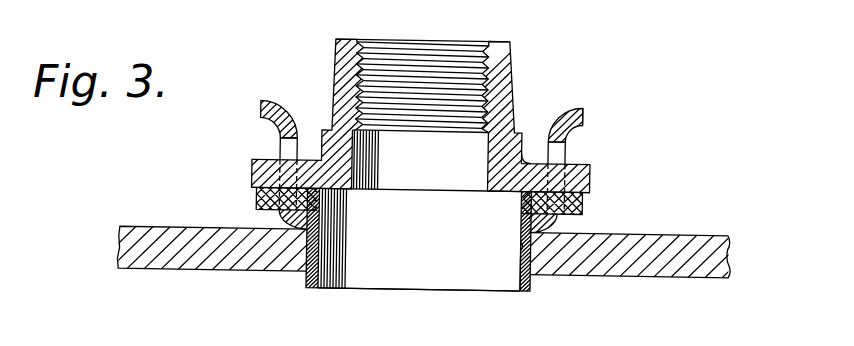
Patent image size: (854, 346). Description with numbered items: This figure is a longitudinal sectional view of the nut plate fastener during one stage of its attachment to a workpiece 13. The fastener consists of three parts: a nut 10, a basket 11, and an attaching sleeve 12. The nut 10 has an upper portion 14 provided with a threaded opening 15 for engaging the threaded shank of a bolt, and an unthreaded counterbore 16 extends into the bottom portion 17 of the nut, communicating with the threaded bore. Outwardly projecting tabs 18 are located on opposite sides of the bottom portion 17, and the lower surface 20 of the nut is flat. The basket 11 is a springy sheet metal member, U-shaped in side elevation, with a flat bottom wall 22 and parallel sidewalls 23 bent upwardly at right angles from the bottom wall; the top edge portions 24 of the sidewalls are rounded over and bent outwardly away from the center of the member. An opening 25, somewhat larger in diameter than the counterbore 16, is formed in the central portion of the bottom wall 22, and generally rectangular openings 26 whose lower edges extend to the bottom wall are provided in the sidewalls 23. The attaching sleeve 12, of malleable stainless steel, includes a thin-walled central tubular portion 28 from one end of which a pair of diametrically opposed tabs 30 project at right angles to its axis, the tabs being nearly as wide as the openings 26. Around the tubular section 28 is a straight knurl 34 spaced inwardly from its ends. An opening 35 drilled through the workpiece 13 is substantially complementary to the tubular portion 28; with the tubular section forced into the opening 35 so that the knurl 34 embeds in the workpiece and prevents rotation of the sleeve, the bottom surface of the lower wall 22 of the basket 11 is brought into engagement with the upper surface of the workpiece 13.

The nut 10 is at (356, 26).
The basket 11 is at (578, 114).
The attaching sleeve 12 is at (304, 284).
The workpiece 13 is at (701, 235).
The upper portion 14 is at (511, 43).
The threaded opening 15 is at (432, 46).
The counterbore 16 is at (453, 183).
The bottom portion 17 is at (545, 106).
The tabs 18 is at (253, 176).
The lower surface 20 is at (506, 193).
The bottom wall 22 is at (303, 205).
The sidewalls 23 is at (279, 139).
The top edge portions 24 is at (296, 90).
The opening 25 is at (326, 230).
The rectangular openings 26 is at (283, 153).
The tubular portion 28 is at (344, 288).
The tabs 30 is at (258, 206).
The straight knurl 34 is at (523, 246).
The opening 35 is at (522, 266).